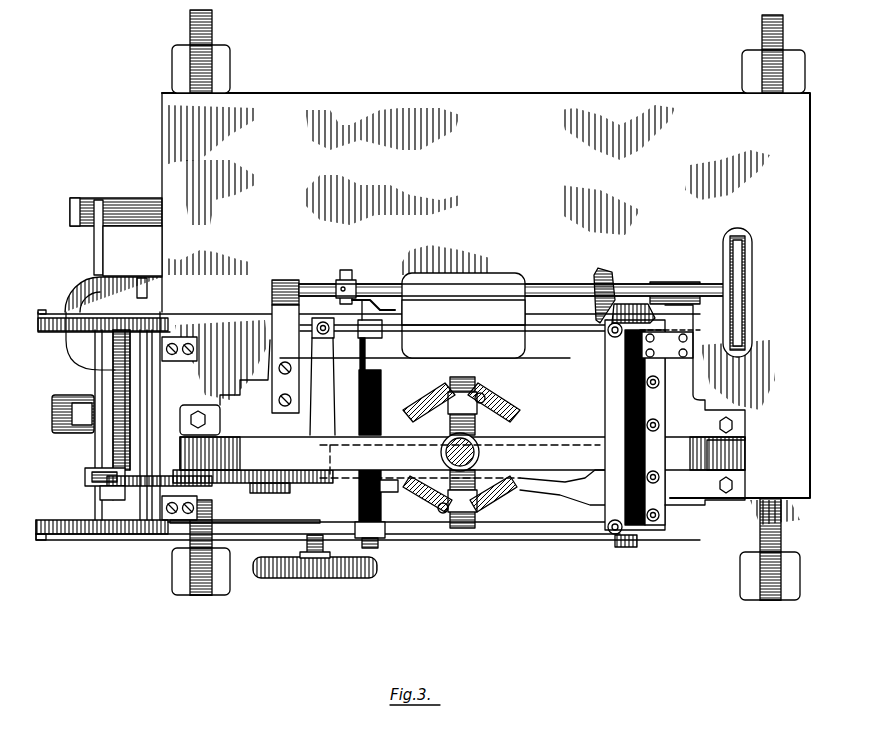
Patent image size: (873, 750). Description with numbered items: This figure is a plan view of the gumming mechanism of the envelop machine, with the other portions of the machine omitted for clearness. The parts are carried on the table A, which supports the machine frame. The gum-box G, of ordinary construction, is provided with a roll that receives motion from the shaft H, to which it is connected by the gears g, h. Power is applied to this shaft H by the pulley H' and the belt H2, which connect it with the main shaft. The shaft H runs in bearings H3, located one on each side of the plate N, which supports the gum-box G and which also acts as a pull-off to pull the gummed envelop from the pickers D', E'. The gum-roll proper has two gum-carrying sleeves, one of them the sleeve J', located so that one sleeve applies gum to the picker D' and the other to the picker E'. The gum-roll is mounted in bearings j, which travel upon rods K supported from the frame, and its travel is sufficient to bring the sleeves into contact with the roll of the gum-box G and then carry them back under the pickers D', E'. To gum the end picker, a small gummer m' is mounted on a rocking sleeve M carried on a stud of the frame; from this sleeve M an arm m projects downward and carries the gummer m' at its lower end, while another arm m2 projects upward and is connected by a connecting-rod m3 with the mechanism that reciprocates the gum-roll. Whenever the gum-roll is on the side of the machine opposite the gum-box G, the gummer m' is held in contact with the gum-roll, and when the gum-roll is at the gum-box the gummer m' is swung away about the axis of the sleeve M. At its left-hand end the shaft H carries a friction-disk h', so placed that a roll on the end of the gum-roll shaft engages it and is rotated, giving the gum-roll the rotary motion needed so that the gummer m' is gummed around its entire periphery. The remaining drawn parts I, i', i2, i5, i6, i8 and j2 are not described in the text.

The table A is at (486, 309).
The shaft i2 is at (116, 240).
The elbow pipe i6 is at (370, 309).
The rack bar I is at (115, 366).
The gear i8 is at (95, 433).
The bracket i5 is at (86, 474).
The connecting-rod m3 is at (134, 486).
The arm m2 is at (262, 462).
The gummer m' is at (276, 468).
The arm m is at (315, 536).
The rods K is at (567, 540).
The rail bar i' is at (245, 538).
The bearings H3 is at (292, 278).
The shaft H is at (514, 280).
The friction-disk h' is at (351, 276).
The bearings j is at (398, 307).
The rocking sleeve M is at (338, 420).
The sleeve J' is at (374, 443).
The plate N is at (462, 428).
The picker E' is at (464, 406).
The picker D' is at (511, 499).
The link j2 is at (389, 493).
The gum-box G is at (640, 535).
The gear h is at (605, 285).
The gear g is at (633, 304).
The pulley H' is at (753, 292).
The belt H2 is at (745, 322).